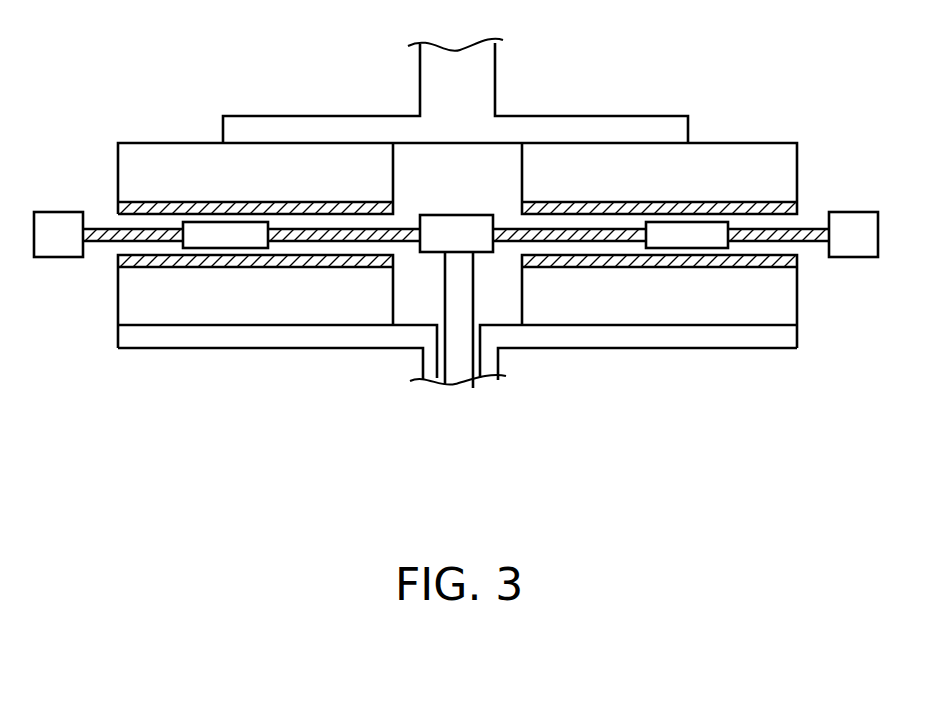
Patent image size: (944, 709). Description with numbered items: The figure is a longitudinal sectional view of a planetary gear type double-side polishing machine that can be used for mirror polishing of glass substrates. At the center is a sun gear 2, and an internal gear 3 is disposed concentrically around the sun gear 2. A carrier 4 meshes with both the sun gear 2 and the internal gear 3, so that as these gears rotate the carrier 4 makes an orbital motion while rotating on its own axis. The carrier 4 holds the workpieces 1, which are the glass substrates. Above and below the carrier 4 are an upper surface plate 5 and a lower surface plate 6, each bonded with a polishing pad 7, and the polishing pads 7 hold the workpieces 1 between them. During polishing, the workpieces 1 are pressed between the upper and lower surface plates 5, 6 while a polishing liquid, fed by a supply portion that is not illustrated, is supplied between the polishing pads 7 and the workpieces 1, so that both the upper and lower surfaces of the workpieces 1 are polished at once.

The workpiece 1 is at (229, 236).
The sun gear 2 is at (430, 243).
The internal gear 3 is at (58, 245).
The carrier 4 is at (148, 232).
The upper surface plate 5 is at (149, 175).
The lower surface plate 6 is at (290, 295).
The polishing pad 7 is at (199, 207).